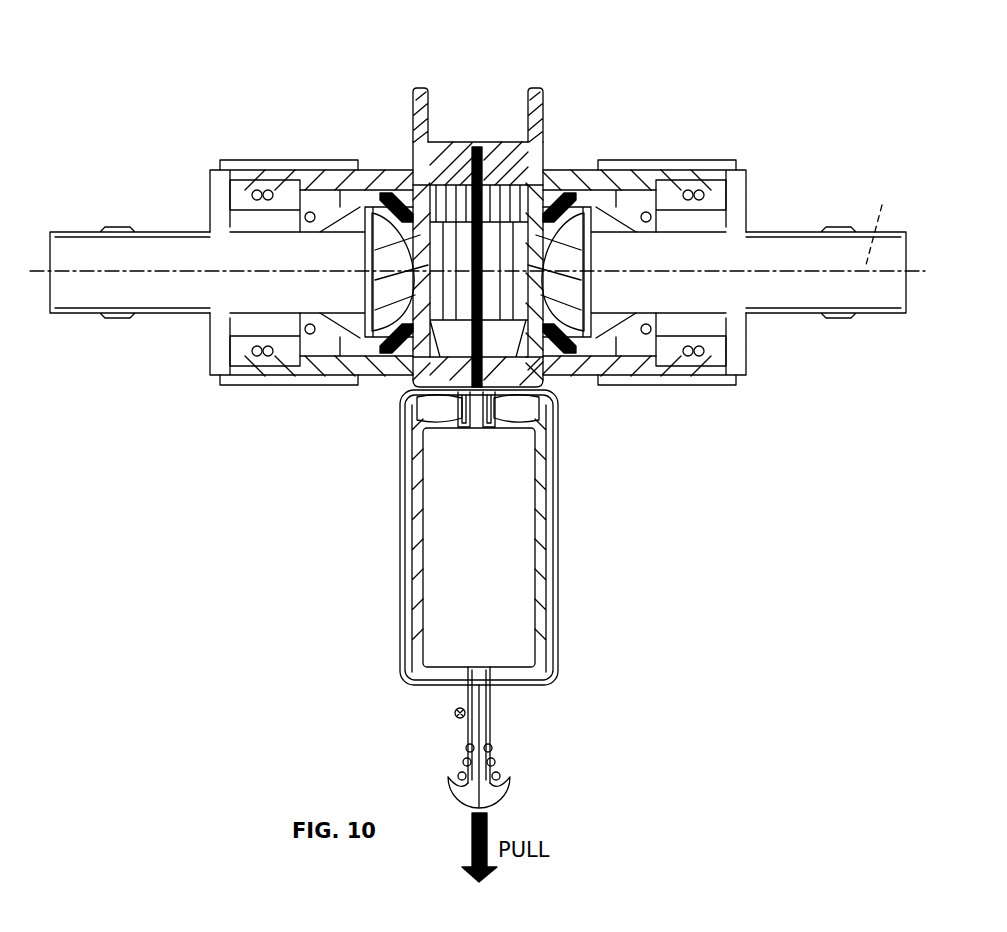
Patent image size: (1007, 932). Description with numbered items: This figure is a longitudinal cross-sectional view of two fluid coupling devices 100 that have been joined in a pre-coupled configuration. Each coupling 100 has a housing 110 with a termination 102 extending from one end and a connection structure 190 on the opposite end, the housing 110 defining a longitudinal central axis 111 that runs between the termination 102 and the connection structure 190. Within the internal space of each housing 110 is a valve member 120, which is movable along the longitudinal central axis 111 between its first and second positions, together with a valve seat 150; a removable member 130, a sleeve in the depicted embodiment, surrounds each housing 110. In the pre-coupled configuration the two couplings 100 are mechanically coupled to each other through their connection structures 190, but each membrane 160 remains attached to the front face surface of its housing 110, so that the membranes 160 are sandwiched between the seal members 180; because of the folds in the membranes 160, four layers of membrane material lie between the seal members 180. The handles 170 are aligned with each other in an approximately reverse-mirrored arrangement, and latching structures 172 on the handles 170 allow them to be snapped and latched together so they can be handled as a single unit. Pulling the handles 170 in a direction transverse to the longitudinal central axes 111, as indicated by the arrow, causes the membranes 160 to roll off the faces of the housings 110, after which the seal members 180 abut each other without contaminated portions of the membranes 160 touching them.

The fluid coupling device 100 is at (252, 72).
The termination 102 is at (100, 230).
The housing 110 is at (378, 170).
The longitudinal central axis 111 is at (888, 202).
The valve member 120 is at (372, 272).
The removable member 130 is at (238, 160).
The valve seat 150 is at (385, 342).
The membrane 160 is at (479, 147).
The handle 170 is at (450, 788).
The latching structure 172 is at (432, 713).
The seal member 180 is at (428, 352).
The connection structure 190 is at (443, 100).